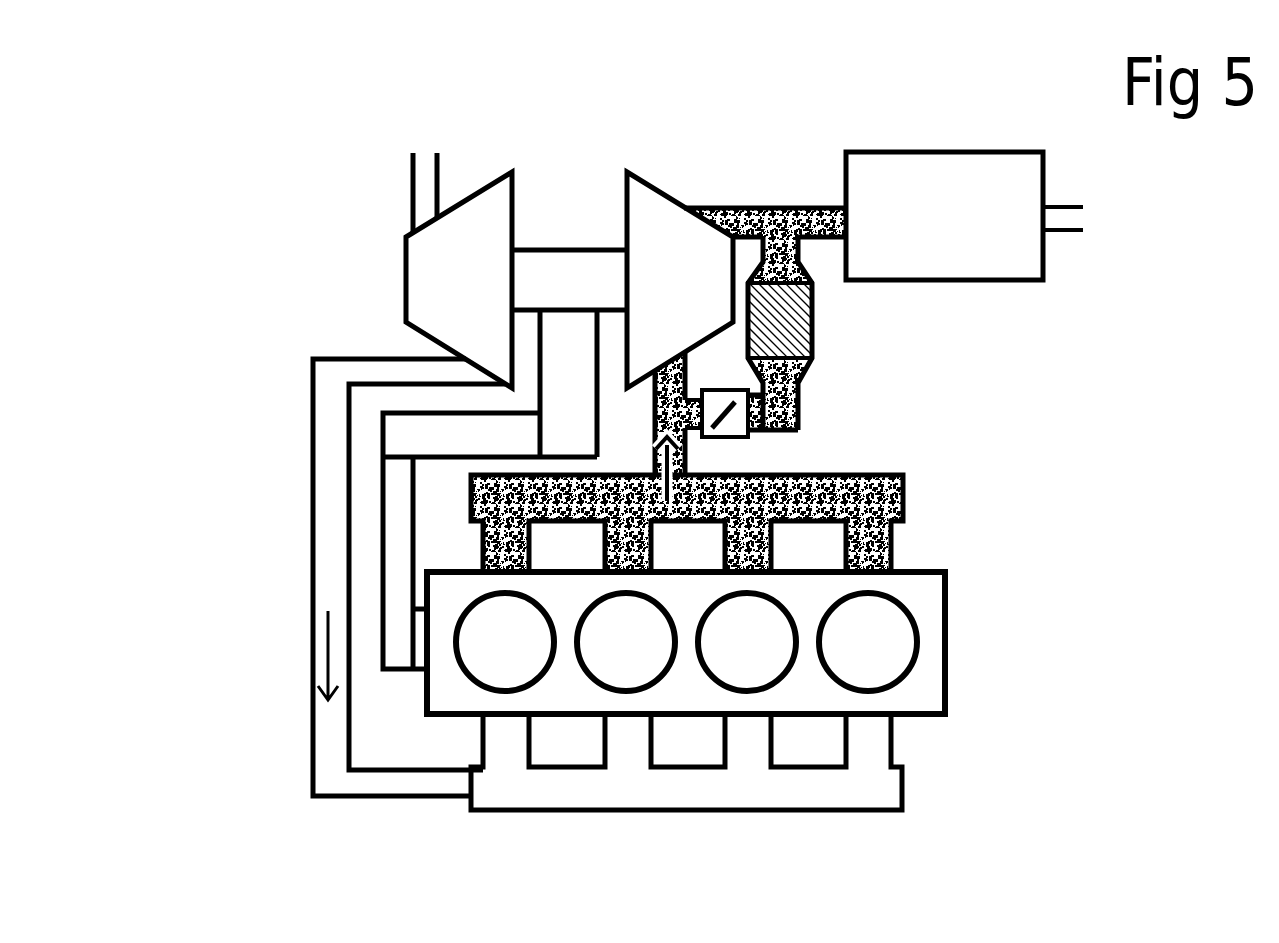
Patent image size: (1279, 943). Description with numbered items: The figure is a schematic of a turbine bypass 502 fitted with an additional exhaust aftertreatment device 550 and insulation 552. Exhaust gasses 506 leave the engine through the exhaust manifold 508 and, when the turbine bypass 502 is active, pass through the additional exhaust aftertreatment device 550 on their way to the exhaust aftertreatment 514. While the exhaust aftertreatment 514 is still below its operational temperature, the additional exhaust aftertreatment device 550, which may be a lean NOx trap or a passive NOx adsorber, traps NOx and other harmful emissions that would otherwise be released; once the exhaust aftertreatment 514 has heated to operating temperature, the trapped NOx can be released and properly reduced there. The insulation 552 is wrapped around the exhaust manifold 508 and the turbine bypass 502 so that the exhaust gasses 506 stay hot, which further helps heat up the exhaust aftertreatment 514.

The turbine bypass 502 is at (838, 315).
The exhaust gasses 506 is at (663, 457).
The exhaust manifold 508 is at (895, 527).
The exhaust aftertreatment 514 is at (932, 198).
The additional exhaust aftertreatment device 550 is at (782, 338).
The insulation 552 is at (815, 475).